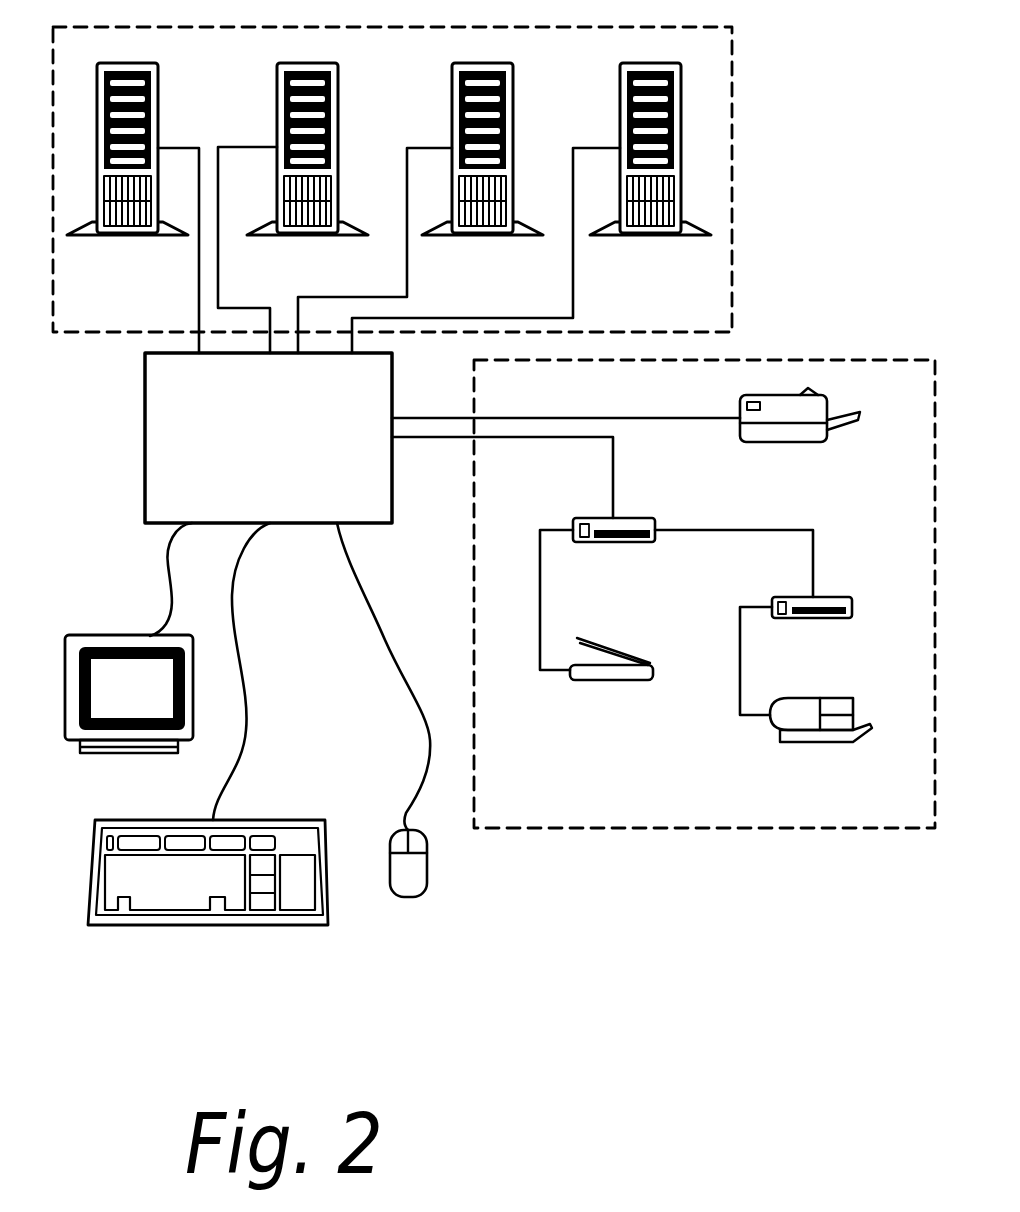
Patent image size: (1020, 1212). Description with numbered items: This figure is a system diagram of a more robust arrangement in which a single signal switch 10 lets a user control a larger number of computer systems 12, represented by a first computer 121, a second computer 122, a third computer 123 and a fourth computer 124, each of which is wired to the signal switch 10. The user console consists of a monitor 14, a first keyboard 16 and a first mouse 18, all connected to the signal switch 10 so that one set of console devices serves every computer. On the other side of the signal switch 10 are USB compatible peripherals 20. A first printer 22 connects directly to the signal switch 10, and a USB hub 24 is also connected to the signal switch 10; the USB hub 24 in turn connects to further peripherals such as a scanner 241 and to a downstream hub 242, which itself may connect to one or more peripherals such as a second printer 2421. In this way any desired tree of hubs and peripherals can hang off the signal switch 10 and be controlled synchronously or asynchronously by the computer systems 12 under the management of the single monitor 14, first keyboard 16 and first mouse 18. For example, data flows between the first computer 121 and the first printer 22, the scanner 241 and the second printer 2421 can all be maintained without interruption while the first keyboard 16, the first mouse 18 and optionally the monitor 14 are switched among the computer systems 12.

The signal switch 10 is at (282, 452).
The computer systems 12 is at (412, 84).
The first computer 121 is at (150, 274).
The second computer 122 is at (332, 274).
The third computer 123 is at (507, 274).
The fourth computer 124 is at (673, 274).
The monitor 14 is at (147, 792).
The first keyboard 16 is at (223, 967).
The first mouse 18 is at (422, 939).
The USB compatible peripherals 20 is at (555, 790).
The first printer 22 is at (800, 483).
The USB hub 24 is at (625, 574).
The scanner 241 is at (633, 714).
The downstream hub 242 is at (833, 654).
The second printer 2421 is at (840, 777).